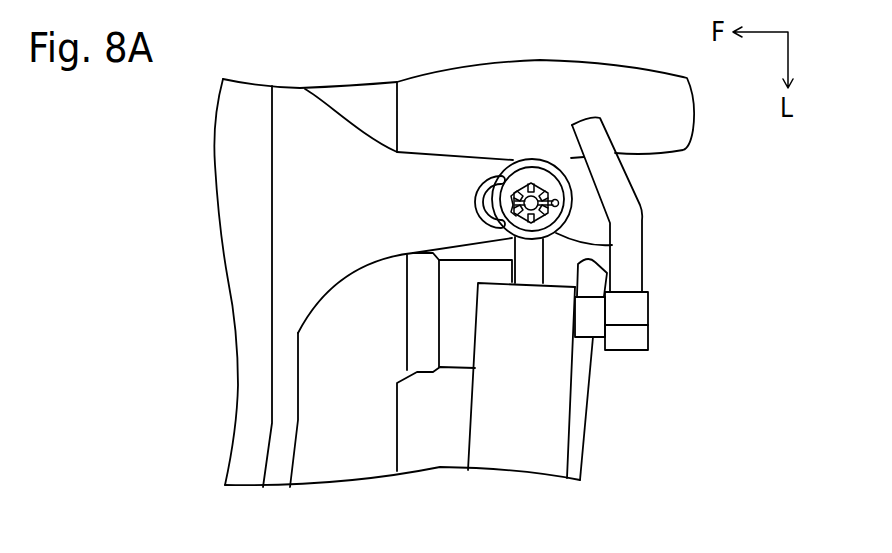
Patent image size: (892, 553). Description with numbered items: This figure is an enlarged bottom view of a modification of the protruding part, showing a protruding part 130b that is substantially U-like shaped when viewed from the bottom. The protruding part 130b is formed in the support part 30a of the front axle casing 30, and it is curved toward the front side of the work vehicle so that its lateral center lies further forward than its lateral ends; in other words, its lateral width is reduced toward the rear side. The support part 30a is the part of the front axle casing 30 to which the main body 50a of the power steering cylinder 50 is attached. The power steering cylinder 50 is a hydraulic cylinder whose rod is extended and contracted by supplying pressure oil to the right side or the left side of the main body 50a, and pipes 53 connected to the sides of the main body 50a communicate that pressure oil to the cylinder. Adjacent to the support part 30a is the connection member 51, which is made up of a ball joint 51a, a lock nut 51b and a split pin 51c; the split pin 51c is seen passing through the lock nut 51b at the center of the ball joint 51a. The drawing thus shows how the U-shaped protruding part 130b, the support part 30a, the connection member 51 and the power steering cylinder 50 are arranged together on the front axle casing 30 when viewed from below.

The front axle casing 30 is at (408, 429).
The support part 30a is at (468, 168).
The protruding part 130b is at (500, 166).
The connection member 51 is at (624, 207).
The ball joint 51a is at (550, 214).
The lock nut 51b is at (548, 196).
The split pin 51c is at (560, 204).
The pipe 53 is at (632, 272).
The power steering cylinder 50 is at (462, 406).
The main body 50a is at (553, 453).